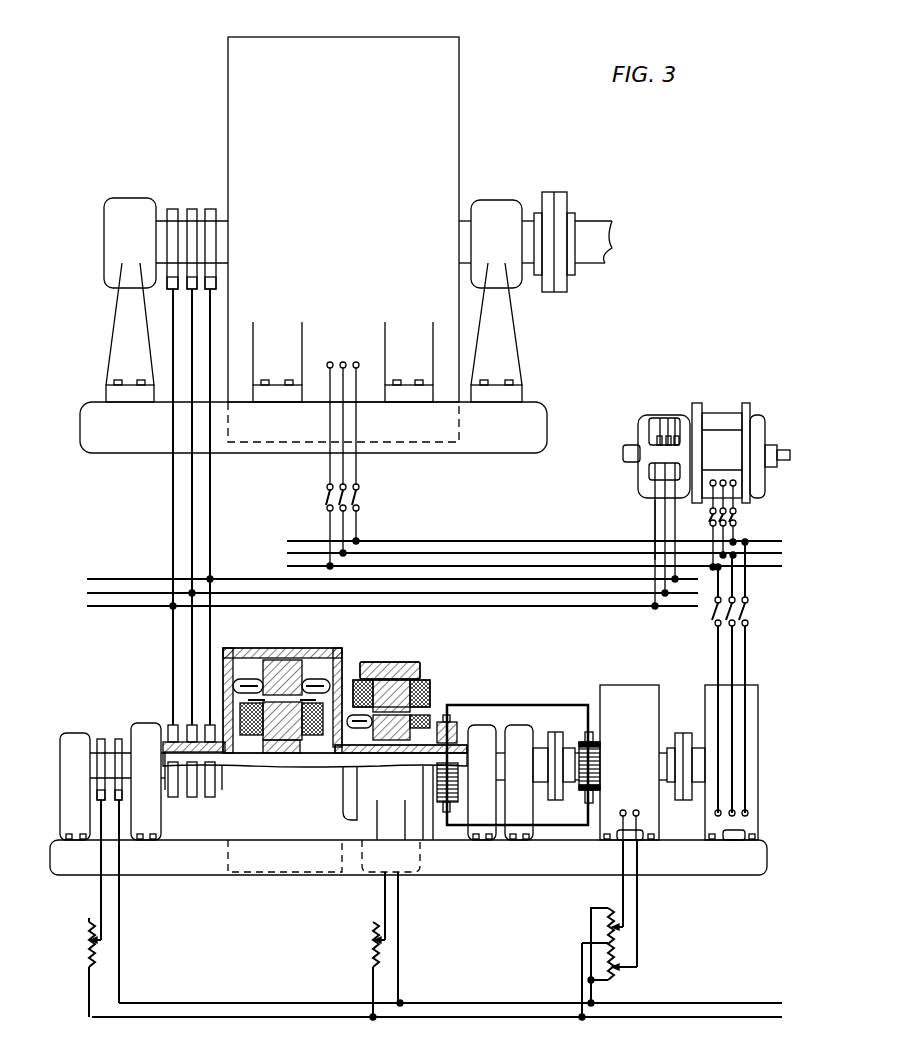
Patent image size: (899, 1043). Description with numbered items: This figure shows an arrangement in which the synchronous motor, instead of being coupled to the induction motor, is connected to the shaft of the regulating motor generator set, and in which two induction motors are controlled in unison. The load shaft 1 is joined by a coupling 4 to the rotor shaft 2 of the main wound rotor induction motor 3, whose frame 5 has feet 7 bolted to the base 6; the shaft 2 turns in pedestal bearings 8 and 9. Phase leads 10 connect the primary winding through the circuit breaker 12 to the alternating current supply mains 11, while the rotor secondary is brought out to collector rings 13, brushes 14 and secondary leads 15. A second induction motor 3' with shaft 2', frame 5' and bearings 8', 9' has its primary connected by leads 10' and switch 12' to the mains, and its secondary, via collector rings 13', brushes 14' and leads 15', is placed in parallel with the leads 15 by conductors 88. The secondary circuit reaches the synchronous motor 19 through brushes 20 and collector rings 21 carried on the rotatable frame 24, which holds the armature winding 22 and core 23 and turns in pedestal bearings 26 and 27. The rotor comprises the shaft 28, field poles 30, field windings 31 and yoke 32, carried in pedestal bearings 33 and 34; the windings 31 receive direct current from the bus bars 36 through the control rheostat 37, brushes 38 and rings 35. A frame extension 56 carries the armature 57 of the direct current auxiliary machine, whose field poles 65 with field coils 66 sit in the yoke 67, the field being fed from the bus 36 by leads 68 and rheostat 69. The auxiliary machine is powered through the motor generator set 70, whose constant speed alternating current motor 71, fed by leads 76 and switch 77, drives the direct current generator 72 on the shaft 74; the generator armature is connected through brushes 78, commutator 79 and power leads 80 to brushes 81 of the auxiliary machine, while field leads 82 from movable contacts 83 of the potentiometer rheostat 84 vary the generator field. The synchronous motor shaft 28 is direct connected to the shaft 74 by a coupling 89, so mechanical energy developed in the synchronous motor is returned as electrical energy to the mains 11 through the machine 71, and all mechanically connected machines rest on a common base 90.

The shaft 1 is at (600, 232).
The rotor shaft 2 is at (548, 221).
The main wound rotor induction motor 3 is at (358, 245).
The coupling 4 is at (562, 200).
The frame 5 is at (329, 219).
The base 6 is at (530, 428).
The feet 7 is at (407, 377).
The pedestal bearing 8 is at (490, 284).
The pedestal bearing 9 is at (164, 285).
The phase leads 10 is at (360, 423).
The alternating current supply mains 11 is at (516, 566).
The circuit breaker 12 is at (359, 526).
The collector rings 13 is at (183, 228).
The brushes 14 is at (213, 302).
The secondary leads 15 is at (174, 507).
The synchronous motor 19 is at (343, 642).
The brushes 20 is at (205, 723).
The collector rings 21 is at (210, 797).
The armature winding 22 is at (243, 680).
The core 23 is at (272, 663).
The frame 24 is at (313, 653).
The pedestal bearing 26 is at (143, 733).
The pedestal bearing 27 is at (483, 731).
The shaft 28 is at (92, 768).
The field poles 30 is at (288, 725).
The field windings 31 is at (253, 730).
The yoke 32 is at (280, 755).
The pedestal bearing 33 is at (68, 751).
The pedestal bearing 34 is at (515, 731).
The collector rings 35 is at (119, 740).
The bus bars 36 is at (698, 1017).
The control rheostat 37 is at (97, 950).
The brushes 38 is at (118, 798).
The frame extension 56 is at (415, 752).
The armature 57 is at (425, 718).
The field poles 65 is at (383, 672).
The field coils 66 is at (425, 692).
The yoke 67 is at (420, 668).
The leads 68 is at (410, 893).
The adjustable rheostat 69 is at (380, 948).
The regulating motor generator set 70 is at (605, 657).
The constant speed A. C. motor 71 is at (750, 710).
The direct current generator 72 is at (648, 703).
The shaft 74 is at (702, 752).
The leads 76 is at (720, 655).
The switch 77 is at (749, 610).
The brushes 78 is at (594, 737).
The commutator 79 is at (600, 766).
The D. C. power leads 80 is at (505, 704).
The brushes 81 is at (452, 726).
The field leads 82 is at (458, 773).
The movable contacts 83 is at (612, 966).
The potentiometer type rheostat 84 is at (582, 942).
The conductors 88 is at (142, 605).
The coupling 89 is at (552, 738).
The common base 90 is at (503, 872).
The rotor shaft 2' is at (783, 468).
The second induction motor 3' is at (701, 436).
The frame 5' is at (722, 437).
The pedestal bearing 8' is at (776, 435).
The pedestal bearing 9' is at (621, 445).
The leads 10' is at (739, 497).
The switch 12' is at (739, 539).
The collector rings 13' is at (664, 433).
The brushes 14' is at (635, 541).
The leads 15' is at (645, 530).